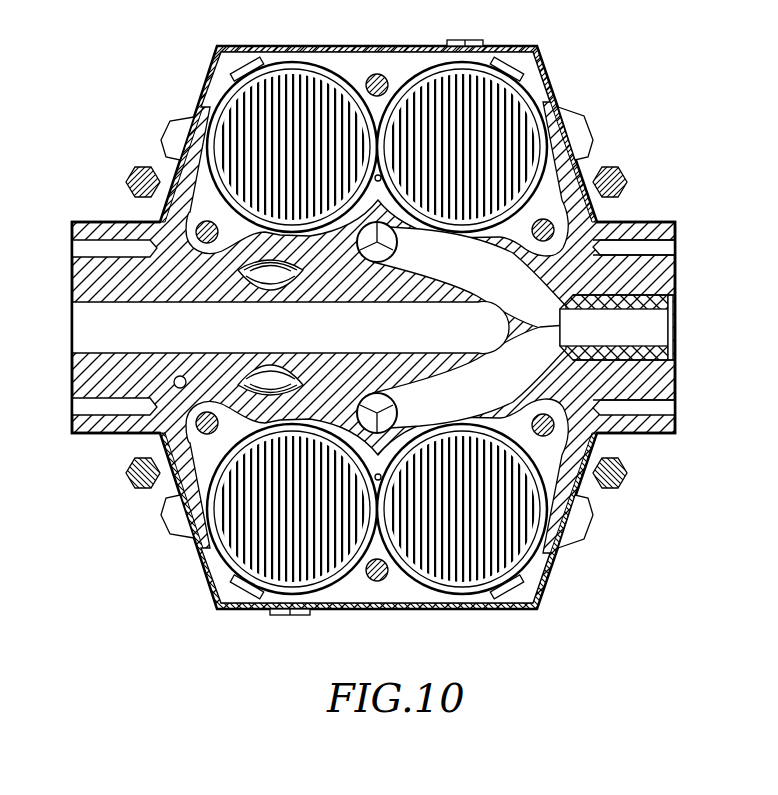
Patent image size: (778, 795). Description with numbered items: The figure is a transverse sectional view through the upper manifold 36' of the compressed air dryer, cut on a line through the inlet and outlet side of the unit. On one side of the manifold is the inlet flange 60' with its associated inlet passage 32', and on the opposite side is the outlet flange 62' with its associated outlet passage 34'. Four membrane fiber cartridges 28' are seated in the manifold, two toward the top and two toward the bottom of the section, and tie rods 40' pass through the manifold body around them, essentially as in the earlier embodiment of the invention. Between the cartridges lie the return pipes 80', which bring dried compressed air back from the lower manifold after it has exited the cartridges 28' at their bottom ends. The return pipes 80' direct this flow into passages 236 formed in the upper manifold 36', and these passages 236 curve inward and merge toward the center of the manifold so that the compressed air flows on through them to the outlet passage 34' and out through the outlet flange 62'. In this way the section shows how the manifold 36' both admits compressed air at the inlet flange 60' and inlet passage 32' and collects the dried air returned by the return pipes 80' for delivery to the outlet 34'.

The membrane fiber cartridge 28' is at (387, 307).
The inlet passage 32' is at (265, 322).
The outlet passage 34' is at (646, 327).
The upper manifold 36' is at (634, 217).
The tie rod 40' is at (371, 332).
The inlet flange 60' is at (96, 325).
The outlet flange 62' is at (667, 325).
The return pipe 80' is at (397, 327).
The passage 236 is at (545, 302).